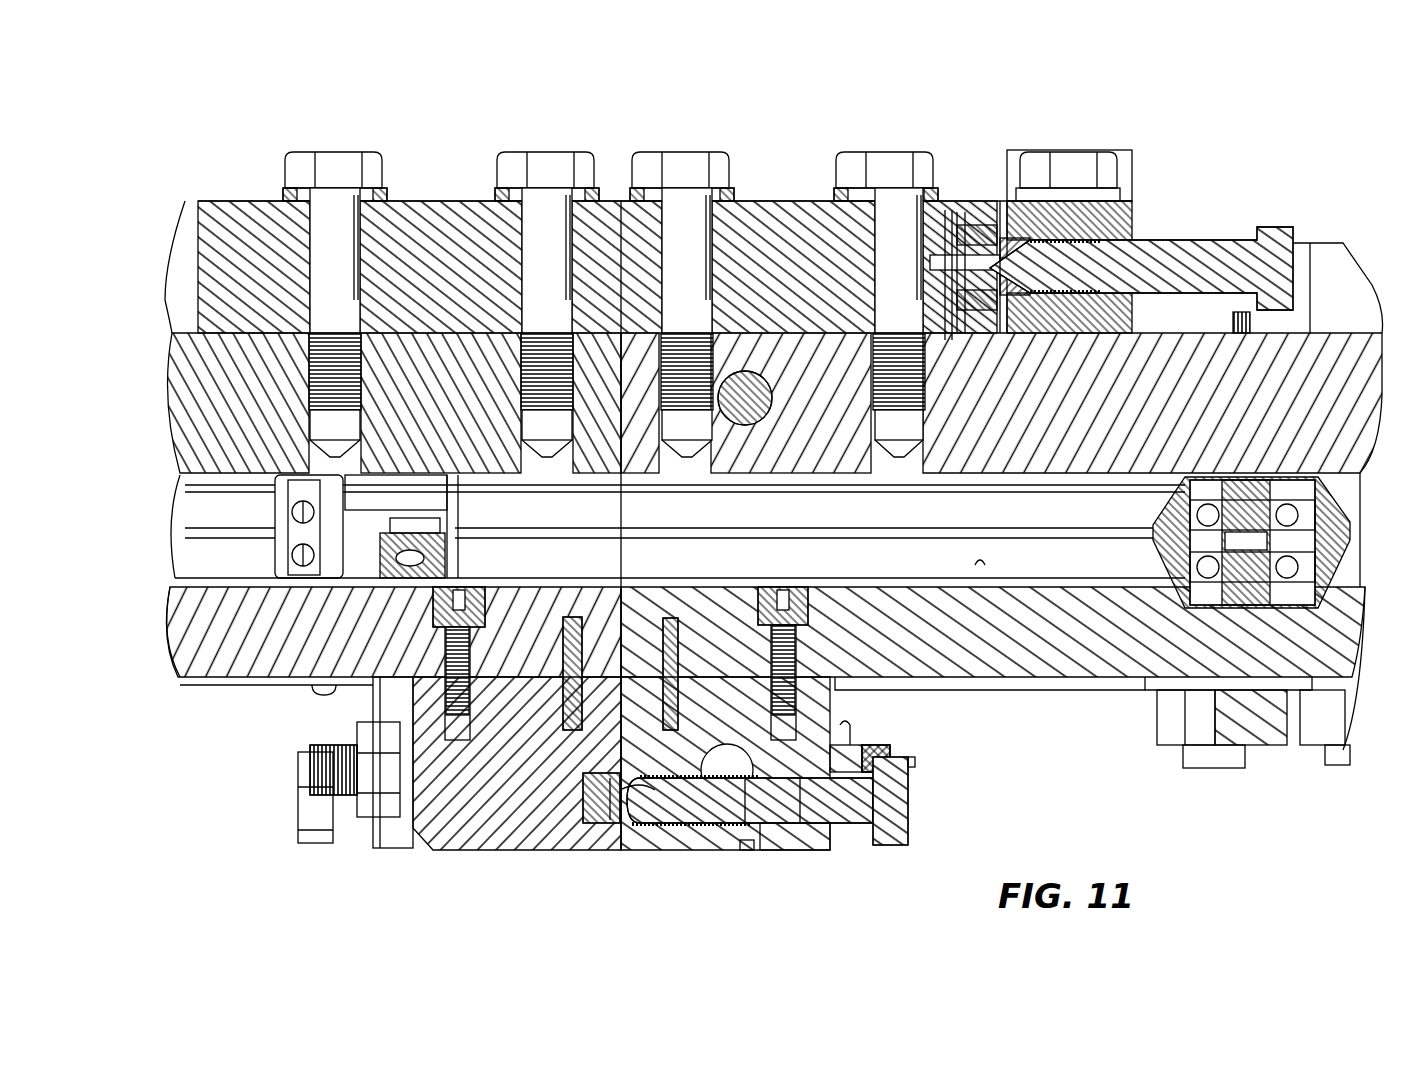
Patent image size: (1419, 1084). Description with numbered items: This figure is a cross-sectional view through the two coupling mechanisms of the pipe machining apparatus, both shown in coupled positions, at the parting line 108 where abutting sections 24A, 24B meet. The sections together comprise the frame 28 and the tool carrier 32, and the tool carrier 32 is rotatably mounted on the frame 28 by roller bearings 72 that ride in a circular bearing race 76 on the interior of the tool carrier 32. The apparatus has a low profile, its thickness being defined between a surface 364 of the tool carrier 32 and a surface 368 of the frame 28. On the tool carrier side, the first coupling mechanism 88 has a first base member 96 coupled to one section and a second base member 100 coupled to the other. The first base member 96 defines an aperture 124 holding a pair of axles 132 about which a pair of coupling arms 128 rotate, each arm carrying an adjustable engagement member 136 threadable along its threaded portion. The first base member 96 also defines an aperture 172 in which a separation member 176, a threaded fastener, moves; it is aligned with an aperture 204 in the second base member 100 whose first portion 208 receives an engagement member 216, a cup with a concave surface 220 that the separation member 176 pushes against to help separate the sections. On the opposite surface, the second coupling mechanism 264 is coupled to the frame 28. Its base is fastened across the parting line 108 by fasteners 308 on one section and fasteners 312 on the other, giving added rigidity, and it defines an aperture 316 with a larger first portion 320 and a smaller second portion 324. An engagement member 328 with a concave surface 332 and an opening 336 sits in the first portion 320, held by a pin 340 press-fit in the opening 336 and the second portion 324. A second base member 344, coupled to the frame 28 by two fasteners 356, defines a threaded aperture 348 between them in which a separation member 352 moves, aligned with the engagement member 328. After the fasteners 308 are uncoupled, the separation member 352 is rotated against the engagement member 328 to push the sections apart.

The frame 28 is at (1350, 345).
The tool carrier 32 is at (185, 635).
The roller bearings 72 is at (1140, 552).
The bearing race 76 is at (985, 565).
The coupling mechanism 88 is at (300, 862).
The first base member 96 is at (832, 840).
The second base member 100 is at (470, 835).
The parting line 108 is at (640, 290).
The aperture 124 is at (726, 790).
The coupling arms 128 is at (300, 725).
The axles 132 is at (742, 790).
The adjustable engagement member 136 is at (372, 808).
The aperture 172 is at (790, 812).
The separation member 176 is at (920, 810).
The aperture 204 is at (598, 825).
The first portion 208 is at (615, 825).
The engagement member 216 is at (565, 770).
The concave surface 220 is at (648, 805).
The section 24A is at (1080, 698).
The section 24B is at (200, 698).
The second coupling mechanism 264 is at (1125, 148).
The fasteners 308 is at (680, 210).
The fasteners 312 is at (332, 190).
The aperture 316 is at (972, 228).
The first portion 320 is at (1000, 285).
The second portion 324 is at (955, 275).
The engagement member 328 is at (968, 300).
The concave surface 332 is at (1120, 245).
The opening 336 is at (978, 235).
The pin 340 is at (930, 268).
The second base member 344 is at (1135, 228).
The threaded aperture 348 is at (1080, 285).
The separation member 352 is at (1212, 252).
The fasteners 356 is at (1068, 165).
The surface 364 is at (1100, 695).
The surface 368 is at (185, 330).